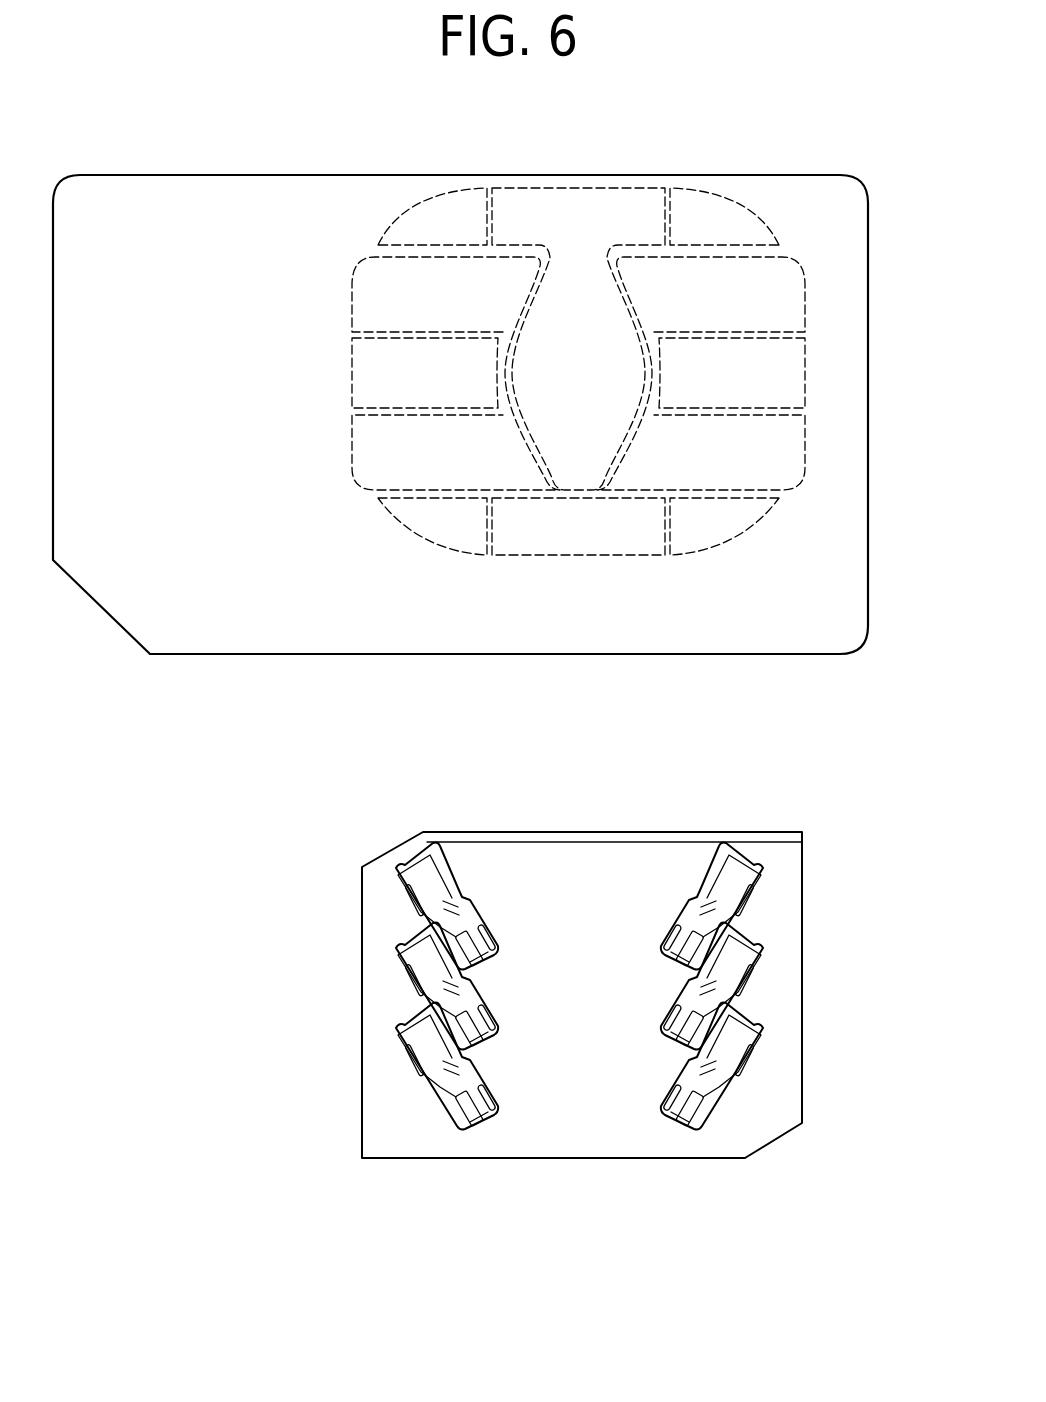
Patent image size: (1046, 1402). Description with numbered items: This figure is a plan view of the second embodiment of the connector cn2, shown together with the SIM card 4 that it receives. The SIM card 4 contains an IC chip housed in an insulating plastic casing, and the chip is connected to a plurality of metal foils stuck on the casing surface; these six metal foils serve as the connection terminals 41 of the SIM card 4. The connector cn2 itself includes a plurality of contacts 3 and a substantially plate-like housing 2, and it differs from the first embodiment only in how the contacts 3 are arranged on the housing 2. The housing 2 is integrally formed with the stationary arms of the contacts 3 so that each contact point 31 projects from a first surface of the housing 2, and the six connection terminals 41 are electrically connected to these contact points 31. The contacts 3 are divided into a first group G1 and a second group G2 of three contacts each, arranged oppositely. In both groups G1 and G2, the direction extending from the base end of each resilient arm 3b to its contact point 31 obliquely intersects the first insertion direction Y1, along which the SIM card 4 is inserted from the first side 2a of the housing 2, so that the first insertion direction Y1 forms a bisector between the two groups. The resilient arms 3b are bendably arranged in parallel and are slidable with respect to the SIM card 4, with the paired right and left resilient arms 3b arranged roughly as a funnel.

The SIM card 4 is at (248, 654).
The connection terminals 41 is at (378, 457).
The housing 2 is at (790, 1150).
The first side 2a is at (660, 827).
The connector cn2 is at (838, 796).
The contacts 3 is at (418, 875).
The contact point 31 is at (440, 921).
The resilient arm 3b is at (440, 903).
The first insertion direction Y1 is at (589, 663).
The first group G1 is at (502, 1183).
The second group G2 is at (665, 1183).